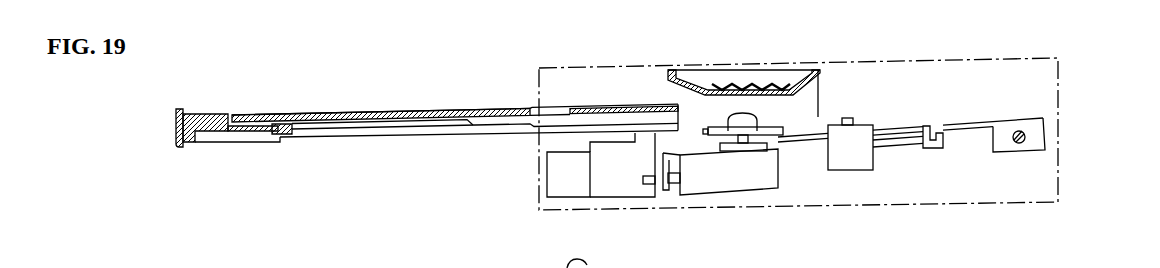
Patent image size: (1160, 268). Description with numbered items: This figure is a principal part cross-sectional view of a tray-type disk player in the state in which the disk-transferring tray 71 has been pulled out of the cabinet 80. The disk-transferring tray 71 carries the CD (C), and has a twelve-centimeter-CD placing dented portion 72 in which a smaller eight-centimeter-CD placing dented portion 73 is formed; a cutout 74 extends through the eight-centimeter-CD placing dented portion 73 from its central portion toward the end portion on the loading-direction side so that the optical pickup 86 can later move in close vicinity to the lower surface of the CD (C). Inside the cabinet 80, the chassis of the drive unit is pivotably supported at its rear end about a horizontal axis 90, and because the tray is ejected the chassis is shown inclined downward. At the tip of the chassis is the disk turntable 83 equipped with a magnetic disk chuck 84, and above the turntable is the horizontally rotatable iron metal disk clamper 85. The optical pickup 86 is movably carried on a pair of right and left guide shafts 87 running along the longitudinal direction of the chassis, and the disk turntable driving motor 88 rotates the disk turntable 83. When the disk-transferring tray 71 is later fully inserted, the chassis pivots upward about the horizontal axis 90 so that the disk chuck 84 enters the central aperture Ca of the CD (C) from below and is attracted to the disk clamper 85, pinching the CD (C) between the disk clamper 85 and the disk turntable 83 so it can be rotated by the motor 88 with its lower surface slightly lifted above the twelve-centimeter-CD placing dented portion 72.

The disk-transferring tray 71 is at (217, 141).
The 12 cm-CD placing dented portion 72 is at (263, 133).
The 8 cm-CD placing dented portion 73 is at (303, 137).
The cutout 74 is at (412, 127).
The cabinet 80 is at (1047, 182).
The disk turntable 83 is at (783, 128).
The magnetic disk chuck 84 is at (757, 118).
The disk clamper 85 is at (733, 83).
The optical pickup 86 is at (850, 152).
The guide shafts 87 is at (905, 138).
The disk turntable driving motor 88 is at (700, 180).
The horizontal axis 90 is at (1025, 135).
The CD C is at (252, 112).
The central aperture Ca is at (388, 115).